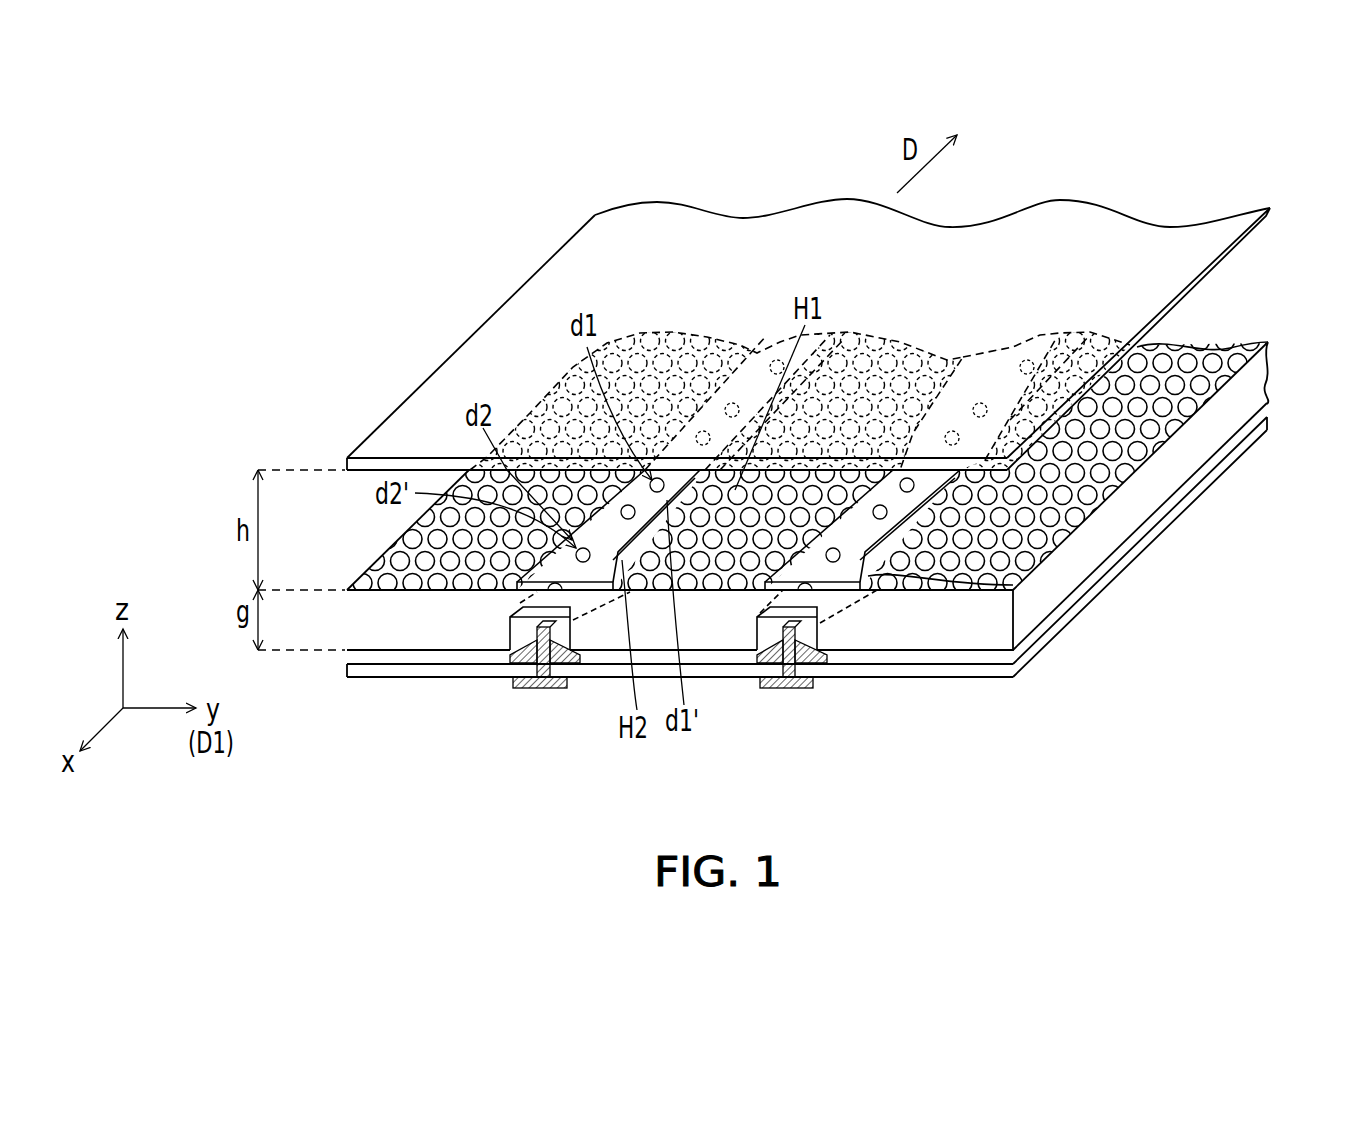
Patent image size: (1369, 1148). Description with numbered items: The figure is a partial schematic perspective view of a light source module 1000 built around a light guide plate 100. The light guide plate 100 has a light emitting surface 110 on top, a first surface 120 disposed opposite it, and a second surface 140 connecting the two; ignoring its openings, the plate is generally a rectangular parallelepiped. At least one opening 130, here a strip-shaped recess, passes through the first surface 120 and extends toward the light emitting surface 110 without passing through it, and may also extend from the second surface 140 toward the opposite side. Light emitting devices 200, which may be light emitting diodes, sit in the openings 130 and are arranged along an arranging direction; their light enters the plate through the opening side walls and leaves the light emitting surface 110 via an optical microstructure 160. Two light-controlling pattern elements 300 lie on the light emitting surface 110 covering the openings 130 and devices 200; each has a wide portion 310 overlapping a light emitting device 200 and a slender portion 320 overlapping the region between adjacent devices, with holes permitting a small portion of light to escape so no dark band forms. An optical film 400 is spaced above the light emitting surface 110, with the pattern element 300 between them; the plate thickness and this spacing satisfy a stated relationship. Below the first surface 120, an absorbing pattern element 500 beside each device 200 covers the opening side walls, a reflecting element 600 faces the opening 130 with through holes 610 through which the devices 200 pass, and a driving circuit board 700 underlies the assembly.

The light guide plate 100 is at (840, 523).
The light emitting surface 110 is at (1205, 378).
The first surface 120 is at (1264, 408).
The opening 130 is at (520, 625).
The second surface 140 is at (985, 616).
The optical microstructure 160 is at (1150, 440).
The light emitting device 200 is at (802, 667).
The light-controlling pattern element 300 is at (918, 537).
The wide portion 310 is at (1100, 470).
The slender portion 320 is at (1240, 462).
The optical film 400 is at (1272, 212).
The absorbing pattern element 500 is at (548, 690).
The reflecting element 600 is at (1030, 677).
The through hole 610 is at (548, 665).
The driving circuit board 700 is at (527, 690).
The light source module 1000 is at (1197, 776).